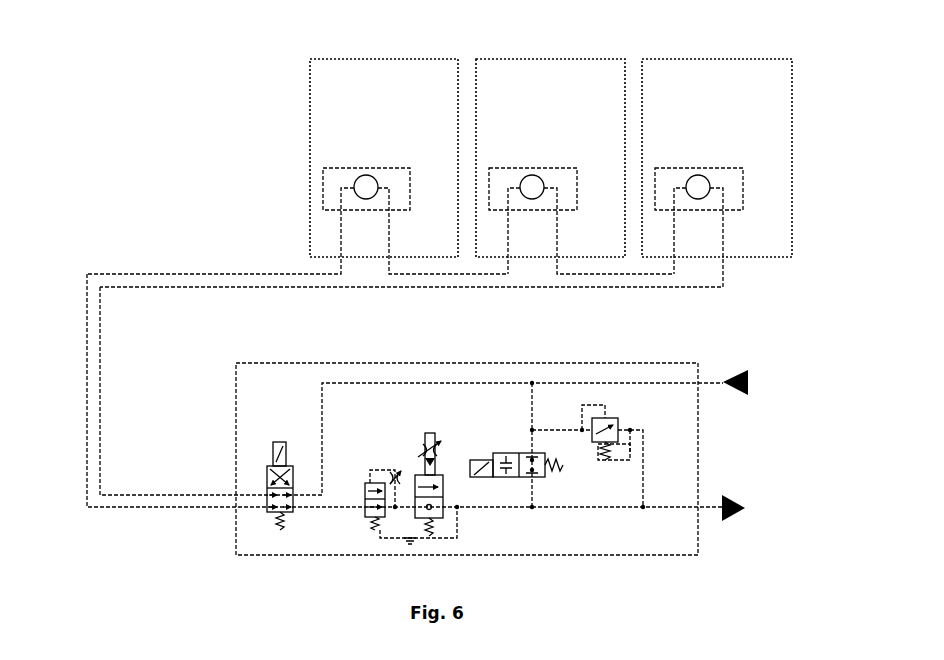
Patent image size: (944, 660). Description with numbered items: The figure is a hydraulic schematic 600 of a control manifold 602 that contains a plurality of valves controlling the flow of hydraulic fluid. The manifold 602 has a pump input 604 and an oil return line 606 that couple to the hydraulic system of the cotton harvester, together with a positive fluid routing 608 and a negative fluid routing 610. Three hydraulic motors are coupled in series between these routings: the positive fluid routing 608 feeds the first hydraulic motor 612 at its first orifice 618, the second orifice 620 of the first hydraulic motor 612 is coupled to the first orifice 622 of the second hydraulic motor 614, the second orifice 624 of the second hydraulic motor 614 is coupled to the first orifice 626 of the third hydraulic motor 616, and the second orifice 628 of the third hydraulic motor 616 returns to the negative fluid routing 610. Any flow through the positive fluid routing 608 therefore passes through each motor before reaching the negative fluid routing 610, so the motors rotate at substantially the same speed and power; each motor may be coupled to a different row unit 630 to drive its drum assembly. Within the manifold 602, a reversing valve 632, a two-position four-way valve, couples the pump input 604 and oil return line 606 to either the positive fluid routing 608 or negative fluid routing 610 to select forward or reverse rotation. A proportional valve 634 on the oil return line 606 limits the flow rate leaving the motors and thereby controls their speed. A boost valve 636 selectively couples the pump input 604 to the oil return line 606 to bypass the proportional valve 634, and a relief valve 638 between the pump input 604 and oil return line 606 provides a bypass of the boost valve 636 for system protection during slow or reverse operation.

The hydraulic schematic 600 is at (76, 136).
The control manifold 602 is at (616, 363).
The pump input 604 is at (748, 382).
The oil return line 606 is at (745, 508).
The positive fluid routing 608 is at (150, 494).
The negative fluid routing 610 is at (133, 509).
The first hydraulic motor 612 is at (698, 175).
The second hydraulic motor 614 is at (532, 175).
The third hydraulic motor 616 is at (366, 175).
The first orifice of the first hydraulic motor 618 is at (710, 187).
The second orifice of the first hydraulic motor 620 is at (687, 187).
The first orifice of the second hydraulic motor 622 is at (544, 187).
The second orifice of the second hydraulic motor 624 is at (521, 187).
The first orifice of the third hydraulic motor 626 is at (378, 187).
The second orifice of the third hydraulic motor 628 is at (355, 187).
The row unit 630 is at (305, 128).
The reversing valve 632 is at (278, 541).
The proportional valve 634 is at (361, 536).
The boost valve 636 is at (565, 481).
The relief valve 638 is at (656, 446).